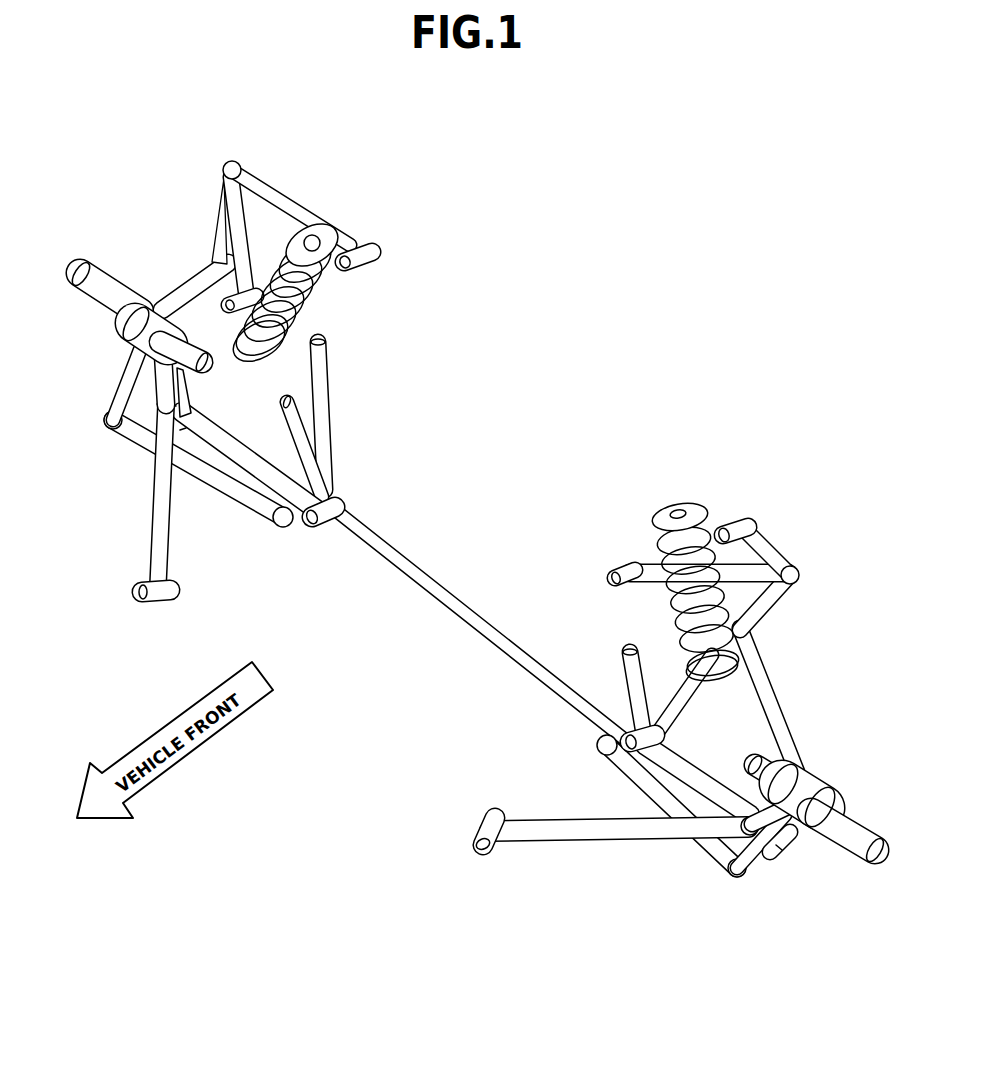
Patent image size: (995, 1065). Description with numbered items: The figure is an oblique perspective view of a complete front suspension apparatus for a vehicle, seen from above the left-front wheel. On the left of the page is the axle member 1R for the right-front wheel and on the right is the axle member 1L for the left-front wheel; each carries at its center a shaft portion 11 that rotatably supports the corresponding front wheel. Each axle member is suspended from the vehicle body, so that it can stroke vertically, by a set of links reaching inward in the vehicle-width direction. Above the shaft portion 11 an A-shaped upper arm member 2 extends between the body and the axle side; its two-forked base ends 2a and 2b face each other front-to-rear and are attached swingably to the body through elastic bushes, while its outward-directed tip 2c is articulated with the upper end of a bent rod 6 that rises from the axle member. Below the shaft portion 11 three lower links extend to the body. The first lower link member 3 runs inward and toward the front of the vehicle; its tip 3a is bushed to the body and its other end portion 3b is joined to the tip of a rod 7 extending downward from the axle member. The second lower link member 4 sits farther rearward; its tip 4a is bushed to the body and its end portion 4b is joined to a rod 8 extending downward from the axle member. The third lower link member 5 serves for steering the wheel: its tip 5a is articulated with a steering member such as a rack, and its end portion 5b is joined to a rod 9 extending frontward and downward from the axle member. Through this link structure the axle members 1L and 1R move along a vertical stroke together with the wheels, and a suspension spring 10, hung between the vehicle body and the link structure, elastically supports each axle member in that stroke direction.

The axle member for right-front wheel 1R is at (125, 328).
The axle member for left-front wheel 1L is at (823, 776).
The upper arm member 2 is at (290, 193).
The base end of upper arm member 2a is at (212, 298).
The base end of upper arm member 2b is at (372, 258).
The tip of upper arm member 2c is at (228, 162).
The first lower link member 3 is at (145, 538).
The tip of first lower link member 3a is at (163, 598).
The end portion of first lower link member 3b is at (157, 408).
The second lower link member 4 is at (250, 442).
The tip of second lower link member 4a is at (338, 503).
The end portion of second lower link member 4b is at (182, 435).
The third lower link member 5 is at (240, 508).
The tip of third lower link member 5a is at (286, 530).
The end portion of third lower link member 5b is at (106, 425).
The bent rod 6 is at (180, 280).
The rod 7 is at (152, 393).
The rod 8 is at (190, 393).
The rod 9 is at (128, 365).
The suspension spring 10 is at (335, 290).
The shaft portion 11 is at (98, 265).